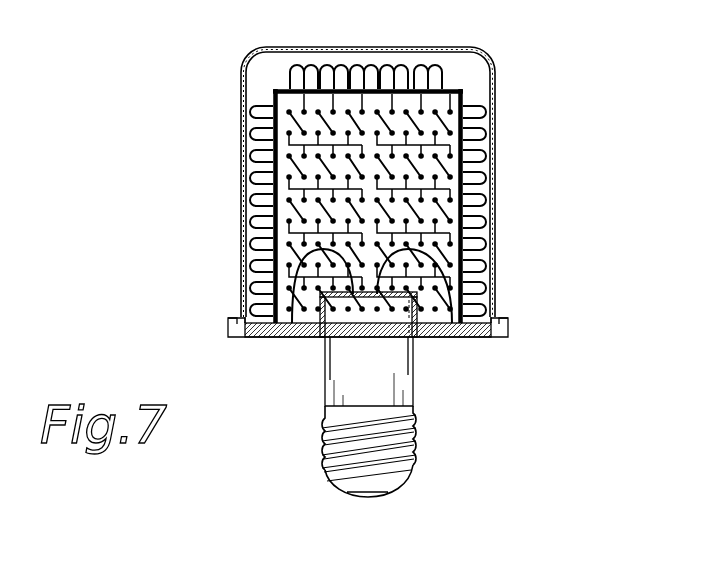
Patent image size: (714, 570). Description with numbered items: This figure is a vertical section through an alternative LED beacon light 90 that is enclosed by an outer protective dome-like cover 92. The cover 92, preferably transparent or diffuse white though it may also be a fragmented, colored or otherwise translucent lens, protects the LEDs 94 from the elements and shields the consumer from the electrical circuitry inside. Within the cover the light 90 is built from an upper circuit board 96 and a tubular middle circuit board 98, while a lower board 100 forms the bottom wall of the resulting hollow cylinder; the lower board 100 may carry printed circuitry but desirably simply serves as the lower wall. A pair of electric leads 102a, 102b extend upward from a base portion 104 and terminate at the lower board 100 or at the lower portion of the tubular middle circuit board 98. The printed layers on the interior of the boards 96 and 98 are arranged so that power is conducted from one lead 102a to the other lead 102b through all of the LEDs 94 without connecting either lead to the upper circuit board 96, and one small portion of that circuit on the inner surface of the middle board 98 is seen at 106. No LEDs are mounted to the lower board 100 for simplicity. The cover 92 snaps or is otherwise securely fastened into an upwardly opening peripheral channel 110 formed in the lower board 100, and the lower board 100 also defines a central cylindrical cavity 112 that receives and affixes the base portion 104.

The beacon light 90 is at (157, 71).
The outer protective dome-like cover 92 is at (472, 47).
The LEDs 94 is at (477, 100).
The upper circuit board 96 is at (258, 120).
The tubular middle circuit board 98 is at (260, 188).
The lower board 100 is at (295, 337).
The electric lead 102a is at (322, 250).
The electric lead 102b is at (410, 250).
The base portion 104 is at (413, 380).
The portion of the circuit 106 is at (440, 158).
The upwardly opening peripheral channel 110 is at (498, 318).
The central cylindrical cavity 112 is at (333, 318).